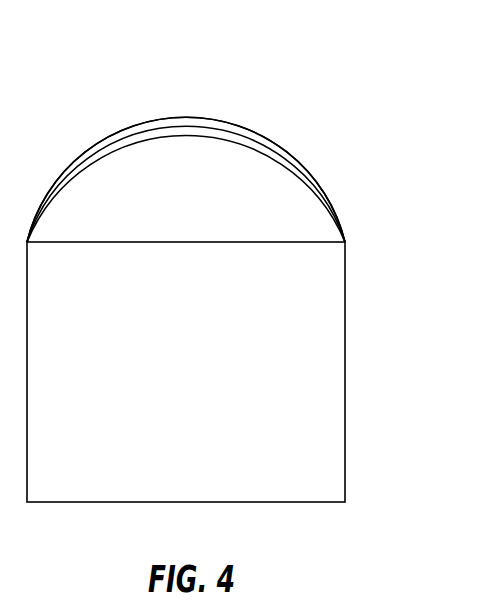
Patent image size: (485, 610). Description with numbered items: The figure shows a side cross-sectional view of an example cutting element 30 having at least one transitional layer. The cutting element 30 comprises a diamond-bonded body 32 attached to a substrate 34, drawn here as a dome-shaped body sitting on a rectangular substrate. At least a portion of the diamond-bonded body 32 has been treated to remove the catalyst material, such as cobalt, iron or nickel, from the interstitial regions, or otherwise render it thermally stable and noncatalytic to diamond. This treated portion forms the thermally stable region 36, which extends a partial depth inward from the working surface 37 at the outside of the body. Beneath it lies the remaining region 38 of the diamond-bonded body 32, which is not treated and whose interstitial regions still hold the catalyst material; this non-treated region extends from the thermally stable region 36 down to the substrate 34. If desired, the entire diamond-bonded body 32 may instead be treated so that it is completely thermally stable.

The cutting element 30 is at (235, 261).
The diamond-bonded body 32 is at (254, 126).
The substrate 34 is at (322, 340).
The thermally stable region 36 is at (172, 119).
The working surface 37 is at (108, 130).
The remaining region 38 is at (150, 132).